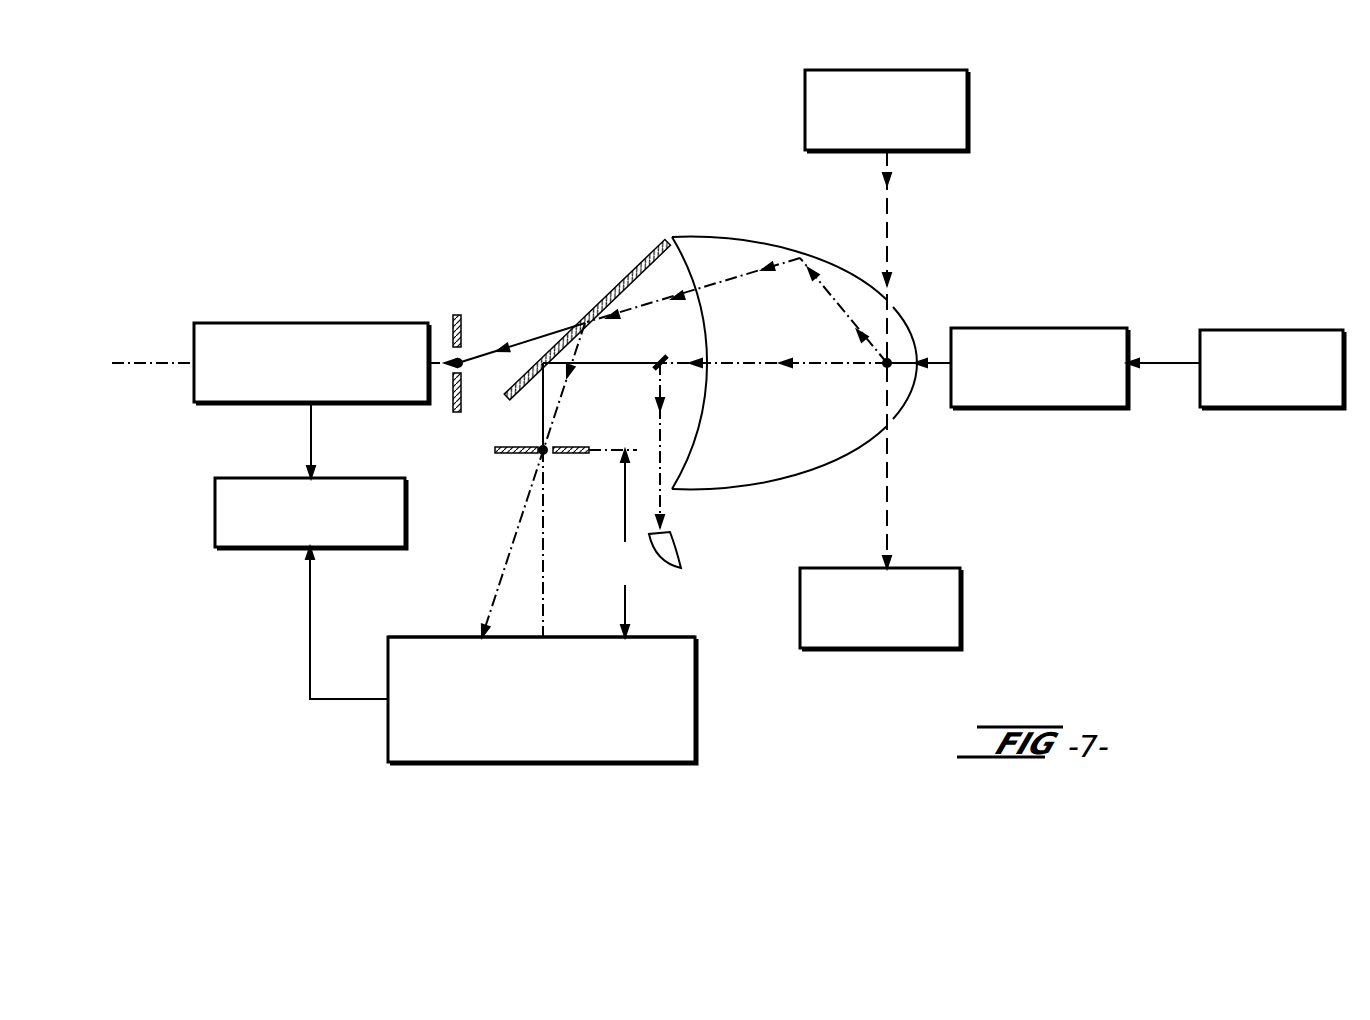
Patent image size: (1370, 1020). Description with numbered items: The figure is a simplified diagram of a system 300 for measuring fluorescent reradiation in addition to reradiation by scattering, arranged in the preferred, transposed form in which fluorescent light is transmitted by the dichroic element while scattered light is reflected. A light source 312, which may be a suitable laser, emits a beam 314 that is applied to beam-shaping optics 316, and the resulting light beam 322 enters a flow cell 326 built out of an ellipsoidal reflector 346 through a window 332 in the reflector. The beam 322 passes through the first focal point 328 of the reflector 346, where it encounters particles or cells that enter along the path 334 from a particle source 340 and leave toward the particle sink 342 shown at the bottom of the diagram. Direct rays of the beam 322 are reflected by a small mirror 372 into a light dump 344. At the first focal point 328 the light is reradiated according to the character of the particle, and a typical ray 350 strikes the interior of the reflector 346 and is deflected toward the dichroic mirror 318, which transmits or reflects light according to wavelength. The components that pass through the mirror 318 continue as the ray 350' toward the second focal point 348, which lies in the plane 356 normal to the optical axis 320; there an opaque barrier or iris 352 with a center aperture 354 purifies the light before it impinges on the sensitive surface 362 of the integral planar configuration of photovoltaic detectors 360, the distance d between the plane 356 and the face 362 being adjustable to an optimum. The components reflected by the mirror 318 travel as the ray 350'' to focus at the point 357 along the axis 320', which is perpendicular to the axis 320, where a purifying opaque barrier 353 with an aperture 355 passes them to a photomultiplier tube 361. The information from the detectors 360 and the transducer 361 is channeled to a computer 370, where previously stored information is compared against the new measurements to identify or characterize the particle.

The system 300 is at (802, 202).
The light source 312 is at (1265, 330).
The beam 314 is at (1160, 368).
The beam-shaping optics 316 is at (1055, 328).
The dichroic mirror 318 is at (645, 262).
The optical axis 320 is at (277, 337).
The axis 320' is at (580, 500).
The light beam 322 is at (797, 367).
The flow cell 326 is at (905, 297).
The first focal point 328 is at (916, 370).
The window 332 is at (917, 358).
The path 334 is at (890, 233).
The particle source 340 is at (906, 70).
The particle sink 342 is at (963, 620).
The light dump 344 is at (682, 550).
The ellipsoidal reflector 346 is at (868, 256).
The second focal point 348 is at (546, 456).
The ray 350 is at (693, 290).
The ray 350' is at (497, 480).
The ray 350'' is at (521, 332).
The opaque barrier 352 is at (550, 452).
The opaque barrier 353 is at (461, 318).
The center aperture 354 is at (538, 447).
The aperture 355 is at (452, 322).
The plane 356 is at (620, 450).
The focal point 357 is at (452, 408).
The integral planar configuration of photovoltaic detectors 360 is at (697, 715).
The photomultiplier tube 361 is at (305, 323).
The sensitive surface 362 is at (552, 637).
The computer 370 is at (215, 525).
The small mirror 372 is at (657, 358).